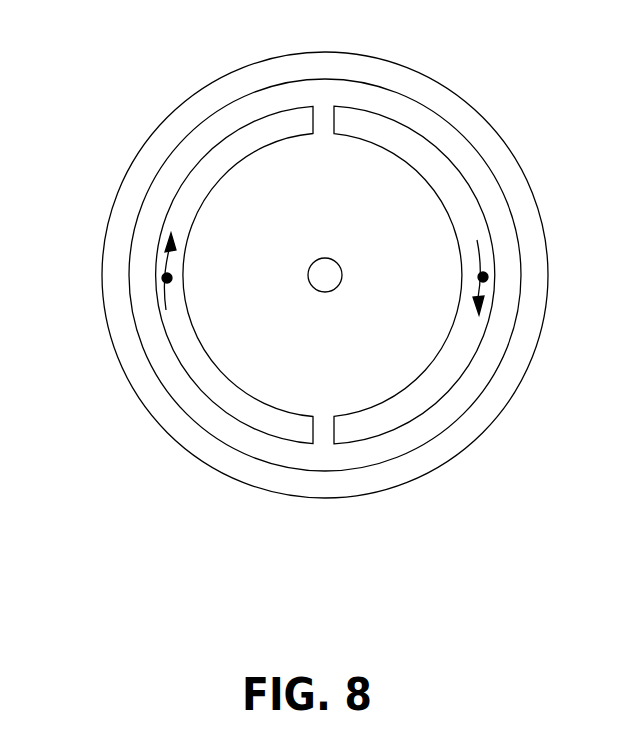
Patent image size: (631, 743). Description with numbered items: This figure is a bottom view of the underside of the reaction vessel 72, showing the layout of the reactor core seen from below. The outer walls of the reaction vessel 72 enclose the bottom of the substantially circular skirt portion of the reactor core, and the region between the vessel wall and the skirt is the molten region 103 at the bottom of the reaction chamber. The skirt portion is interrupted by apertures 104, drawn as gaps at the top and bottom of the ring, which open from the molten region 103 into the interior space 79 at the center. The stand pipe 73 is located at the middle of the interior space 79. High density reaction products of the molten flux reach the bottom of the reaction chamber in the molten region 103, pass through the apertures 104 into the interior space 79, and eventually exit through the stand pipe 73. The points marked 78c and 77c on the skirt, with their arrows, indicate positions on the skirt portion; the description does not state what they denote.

The reaction vessel 72 is at (523, 361).
The molten region 103 is at (488, 388).
The apertures 104 is at (325, 115).
The interior space 79 is at (341, 222).
The stand pipe 73 is at (342, 263).
The flow direction point (left) 78c is at (162, 278).
The flow direction point (right) 77c is at (489, 276).